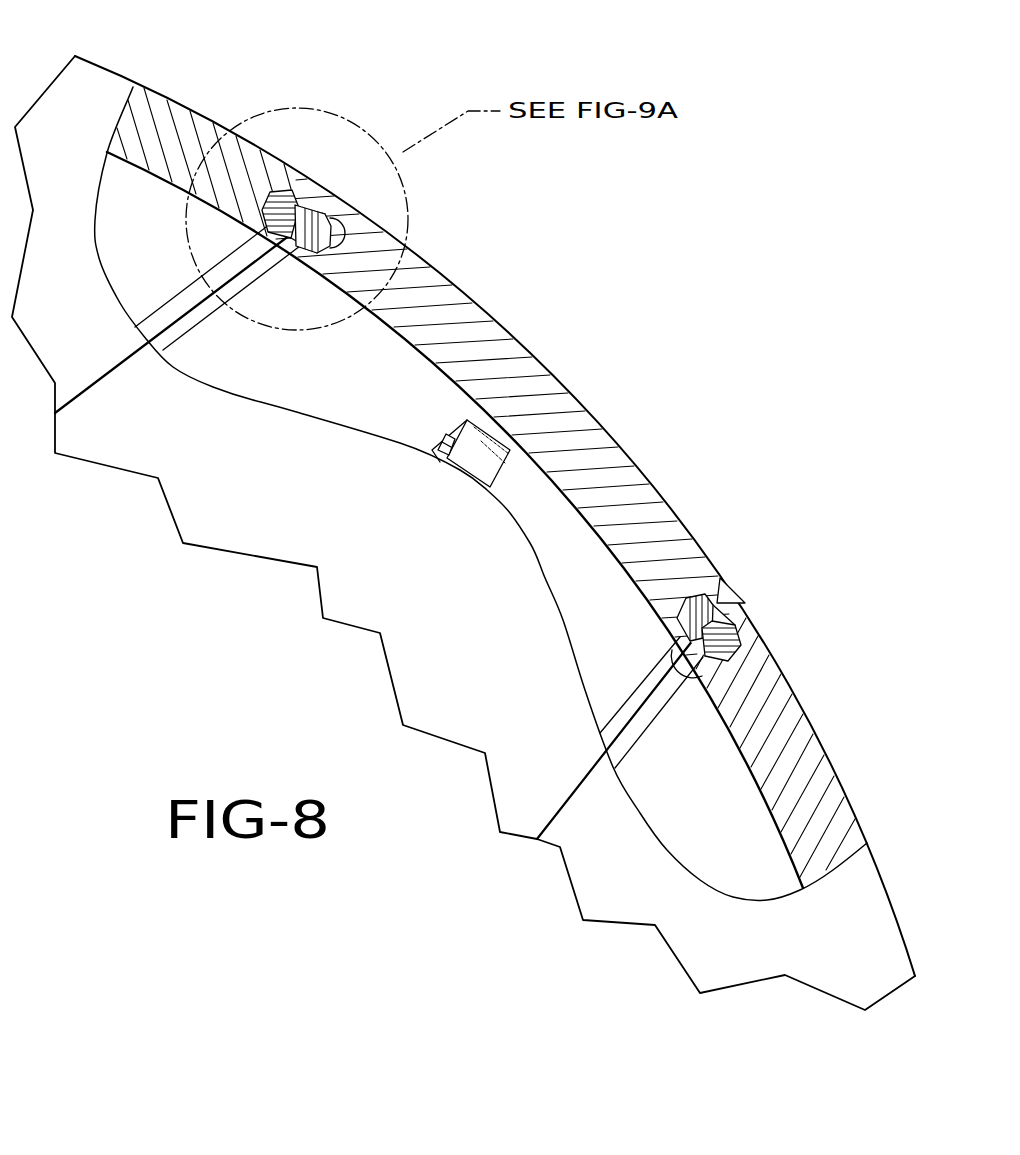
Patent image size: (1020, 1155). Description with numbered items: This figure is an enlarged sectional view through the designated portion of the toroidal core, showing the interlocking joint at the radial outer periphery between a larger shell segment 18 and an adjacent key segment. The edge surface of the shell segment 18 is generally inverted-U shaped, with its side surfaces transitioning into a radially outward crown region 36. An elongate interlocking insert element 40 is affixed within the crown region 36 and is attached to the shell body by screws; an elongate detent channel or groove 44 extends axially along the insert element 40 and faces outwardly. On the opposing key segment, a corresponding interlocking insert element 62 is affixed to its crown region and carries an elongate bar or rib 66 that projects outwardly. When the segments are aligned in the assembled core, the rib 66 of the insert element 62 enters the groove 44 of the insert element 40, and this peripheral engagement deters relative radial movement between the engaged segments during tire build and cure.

The shell segment 18 is at (590, 399).
The crown region 36 is at (735, 606).
The interlocking insert element 40 is at (327, 216).
The detent channel or groove 44 is at (312, 192).
The interlocking insert element 62 is at (283, 190).
The bar or rib 66 is at (300, 186).